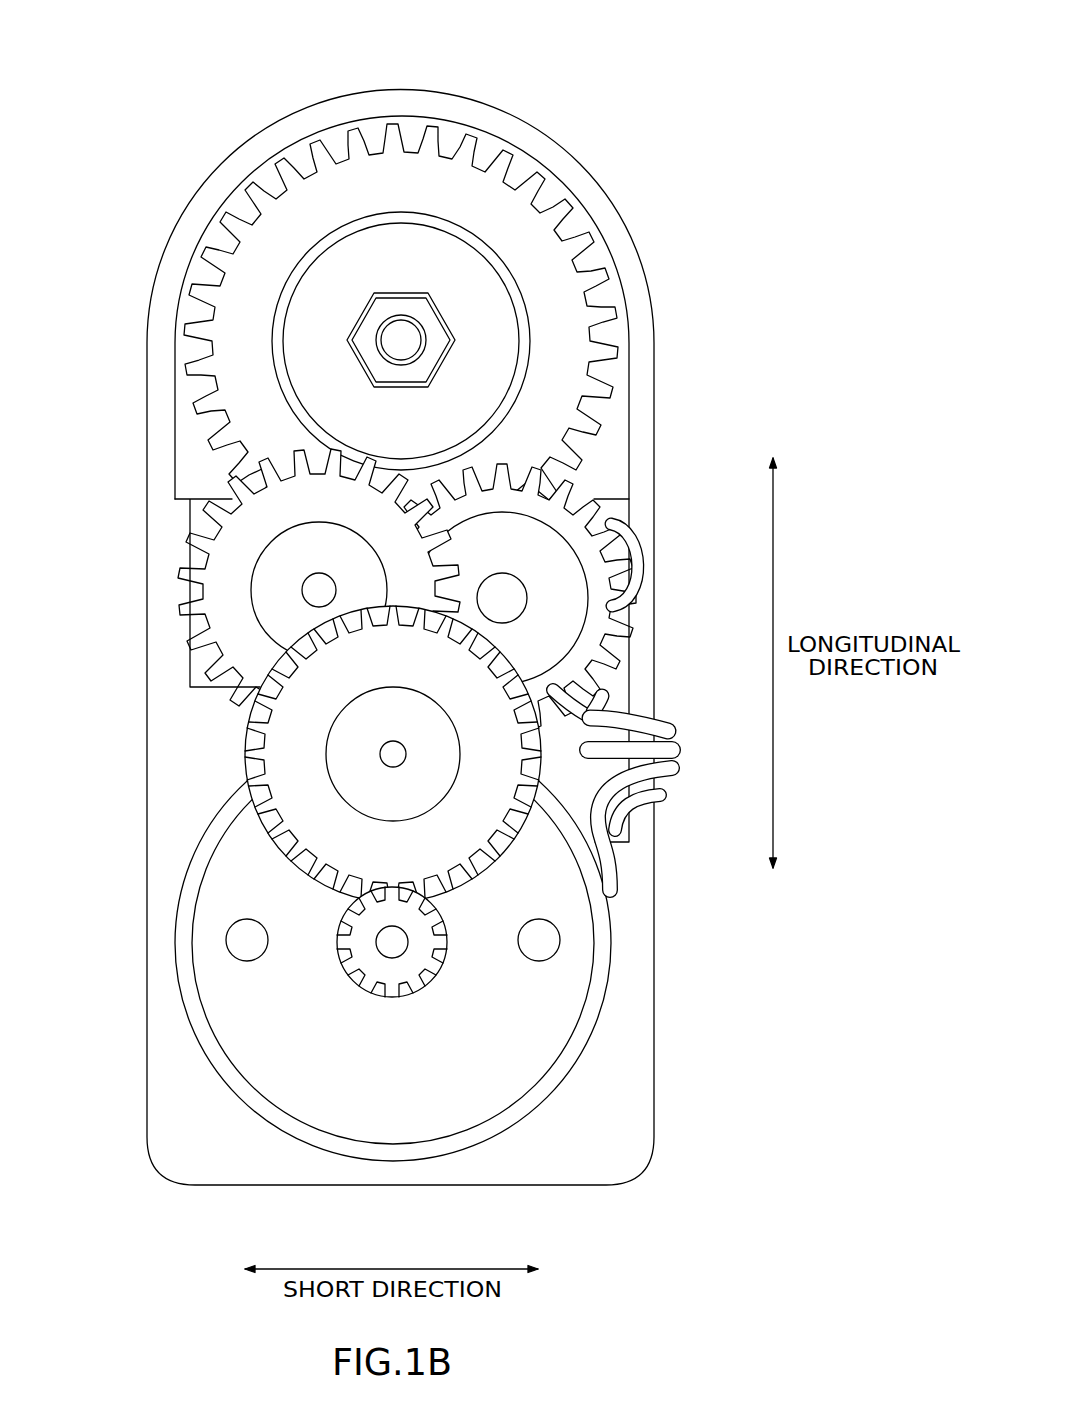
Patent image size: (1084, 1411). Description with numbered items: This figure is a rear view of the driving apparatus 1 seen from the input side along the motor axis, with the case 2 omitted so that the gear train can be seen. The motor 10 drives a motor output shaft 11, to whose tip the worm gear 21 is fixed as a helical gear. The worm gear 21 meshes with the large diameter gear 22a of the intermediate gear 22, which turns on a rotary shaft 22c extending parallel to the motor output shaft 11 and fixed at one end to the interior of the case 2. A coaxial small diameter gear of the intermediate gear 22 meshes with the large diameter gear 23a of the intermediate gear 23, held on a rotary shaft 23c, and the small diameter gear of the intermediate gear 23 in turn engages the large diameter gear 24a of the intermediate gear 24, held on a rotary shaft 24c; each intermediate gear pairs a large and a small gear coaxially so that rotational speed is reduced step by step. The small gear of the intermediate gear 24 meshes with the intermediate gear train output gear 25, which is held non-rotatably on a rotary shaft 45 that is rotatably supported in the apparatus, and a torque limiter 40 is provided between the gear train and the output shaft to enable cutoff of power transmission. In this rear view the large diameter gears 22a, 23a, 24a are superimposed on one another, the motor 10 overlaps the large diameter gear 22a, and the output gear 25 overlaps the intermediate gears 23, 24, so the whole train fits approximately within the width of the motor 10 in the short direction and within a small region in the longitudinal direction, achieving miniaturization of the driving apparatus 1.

The driving apparatus 1 is at (608, 93).
The case 2 is at (630, 903).
The motor 10 is at (600, 1053).
The motor output shaft 11 is at (390, 943).
The worm gear 21 is at (352, 904).
The intermediate gear 22 is at (252, 838).
The large diameter gear 22a is at (252, 767).
The rotary shaft 22c is at (390, 752).
The intermediate gear 23 is at (203, 672).
The large diameter gear 23a is at (205, 622).
The rotary shaft 23c is at (313, 585).
The intermediate gear 24 is at (618, 689).
The large diameter gear 24a is at (610, 636).
The rotary shaft 24c is at (507, 597).
The intermediate gear train output gear 25 is at (543, 220).
The torque limiter 40 is at (485, 143).
The rotary shaft 45 is at (405, 340).